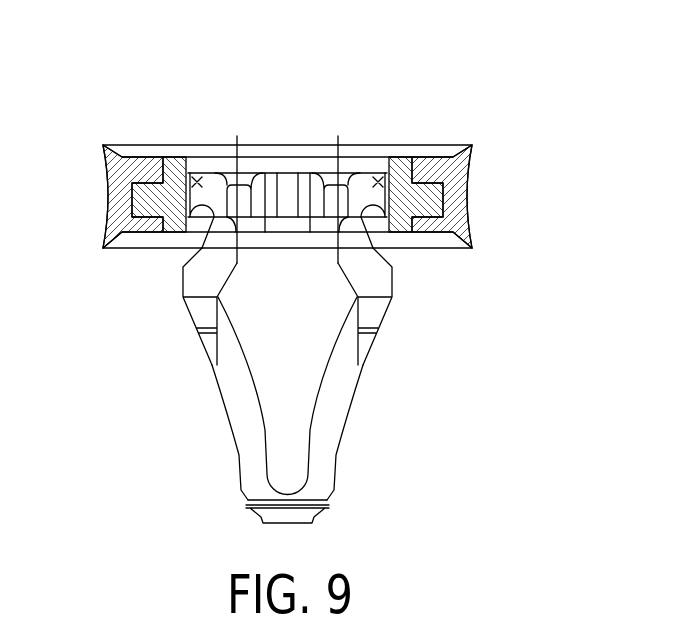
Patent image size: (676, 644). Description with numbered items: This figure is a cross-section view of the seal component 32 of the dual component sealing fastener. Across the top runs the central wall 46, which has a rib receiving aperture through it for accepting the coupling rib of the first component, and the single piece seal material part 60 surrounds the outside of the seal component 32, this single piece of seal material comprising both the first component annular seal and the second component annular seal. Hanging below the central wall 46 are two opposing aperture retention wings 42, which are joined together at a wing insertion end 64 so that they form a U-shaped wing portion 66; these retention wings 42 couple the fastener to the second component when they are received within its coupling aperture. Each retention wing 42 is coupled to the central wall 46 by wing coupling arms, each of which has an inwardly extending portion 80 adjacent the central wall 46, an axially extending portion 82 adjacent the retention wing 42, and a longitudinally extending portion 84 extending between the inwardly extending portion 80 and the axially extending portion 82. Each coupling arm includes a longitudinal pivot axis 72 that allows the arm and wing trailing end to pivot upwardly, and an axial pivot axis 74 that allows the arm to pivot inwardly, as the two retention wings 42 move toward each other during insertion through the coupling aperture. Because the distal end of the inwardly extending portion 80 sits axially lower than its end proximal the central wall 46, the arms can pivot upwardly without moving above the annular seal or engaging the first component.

The seal component 32 is at (496, 131).
The single piece seal material part 60 is at (474, 173).
The central wall 46 is at (150, 196).
The longitudinal pivot axis 72 is at (196, 176).
The axial pivot axis 74 is at (237, 136).
The inwardly extending portion 80 is at (203, 218).
The axially extending portion 82 is at (228, 226).
The longitudinally extending portion 84 is at (262, 244).
The aperture retention wing 42 is at (372, 348).
The U-shaped wing portion 66 is at (208, 402).
The wing insertion end 64 is at (290, 513).